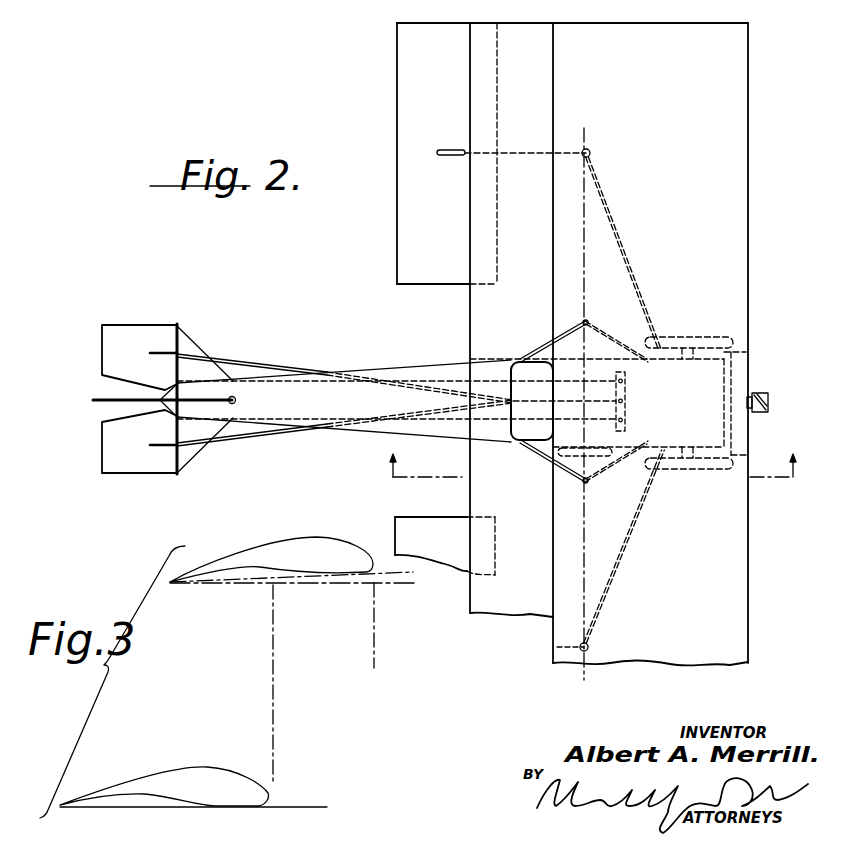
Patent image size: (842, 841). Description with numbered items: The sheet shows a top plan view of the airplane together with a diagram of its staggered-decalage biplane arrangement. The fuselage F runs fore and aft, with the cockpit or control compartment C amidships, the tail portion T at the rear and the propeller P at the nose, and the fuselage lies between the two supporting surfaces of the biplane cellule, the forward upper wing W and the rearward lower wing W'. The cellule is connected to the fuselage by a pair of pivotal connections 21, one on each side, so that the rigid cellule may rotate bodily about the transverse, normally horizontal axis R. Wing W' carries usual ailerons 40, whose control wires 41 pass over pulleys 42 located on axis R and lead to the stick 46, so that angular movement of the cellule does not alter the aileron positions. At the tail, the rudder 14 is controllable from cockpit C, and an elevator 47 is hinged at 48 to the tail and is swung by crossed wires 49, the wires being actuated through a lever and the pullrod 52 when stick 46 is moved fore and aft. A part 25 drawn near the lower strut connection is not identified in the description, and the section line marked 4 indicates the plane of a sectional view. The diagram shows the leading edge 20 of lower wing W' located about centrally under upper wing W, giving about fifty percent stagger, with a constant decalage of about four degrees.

In FIG. 2, the rudder 14 is at (102, 398).
In FIG. 3, the leading edge of rearward lower wing 20 is at (270, 794).
In FIG. 2, the pivotal connection 21 is at (584, 320).
In FIG. 2, the strut bracket 25 is at (570, 460).
In FIG. 2, the aileron 40 is at (397, 100).
In FIG. 2, the aileron control wire 41 is at (616, 221).
In FIG. 2, the pulley 42 is at (591, 149).
In FIG. 2, the stick 46 is at (607, 402).
In FIG. 2, the elevator 47 is at (153, 312).
In FIG. 2, the elevator hinge 48 is at (180, 370).
In FIG. 2, the crossed wires 49 is at (255, 364).
In FIG. 2, the pullrod 52 is at (526, 411).
In FIG. 2, the section line 4- 4 is at (591, 478).
In FIG. 2, the forward upper wing W is at (594, 344).
In FIG. 3, the forward upper wing W is at (271, 555).
In FIG. 2, the rearward lower wing W' is at (456, 320).
In FIG. 3, the rearward lower wing W' is at (164, 778).
In FIG. 2, the transverse axis R is at (587, 265).
In FIG. 2, the fuselage F is at (422, 365).
In FIG. 2, the tail portion T is at (330, 371).
In FIG. 2, the cockpit C is at (520, 370).
In FIG. 2, the propeller P is at (768, 394).